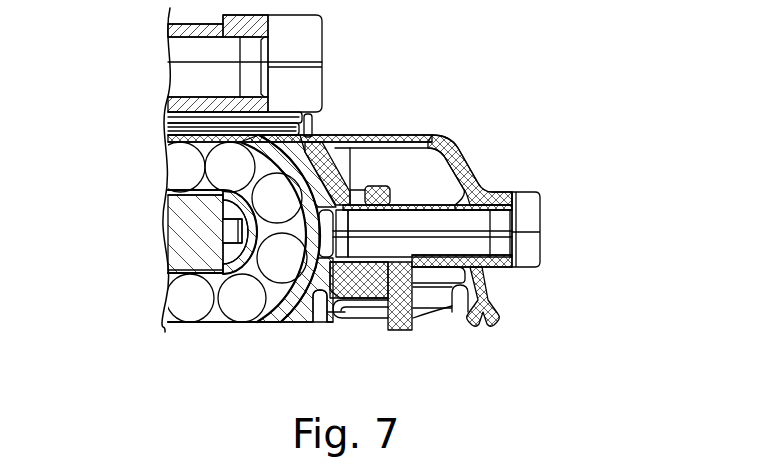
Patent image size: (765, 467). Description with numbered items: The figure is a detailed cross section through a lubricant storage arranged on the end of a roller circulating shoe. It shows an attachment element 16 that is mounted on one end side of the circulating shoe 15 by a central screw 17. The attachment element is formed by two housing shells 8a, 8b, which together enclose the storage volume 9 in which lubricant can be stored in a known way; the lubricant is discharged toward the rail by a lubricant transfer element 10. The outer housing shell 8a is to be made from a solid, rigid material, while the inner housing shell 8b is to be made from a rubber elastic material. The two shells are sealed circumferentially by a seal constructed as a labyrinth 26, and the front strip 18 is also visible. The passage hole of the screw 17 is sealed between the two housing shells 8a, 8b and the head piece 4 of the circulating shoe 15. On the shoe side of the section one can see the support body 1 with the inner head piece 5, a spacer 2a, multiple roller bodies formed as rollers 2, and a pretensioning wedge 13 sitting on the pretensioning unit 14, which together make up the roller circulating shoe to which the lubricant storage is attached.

The support body 1 is at (186, 213).
The rollers 2 is at (186, 298).
The spacer 2a is at (213, 324).
The head piece 4 is at (297, 323).
The inner head piece 5 is at (228, 246).
The outer housing shell 8a is at (412, 148).
The inner housing shell 8b is at (362, 170).
The storage volume 9 is at (472, 168).
The lubricant transfer element 10 is at (398, 331).
The pretensioning wedge 13 is at (181, 31).
The pretensioning unit 14 is at (187, 102).
The circulating shoe 15 is at (132, 159).
The attachment element 16 is at (586, 181).
The central screw 17 is at (531, 226).
The front strip 18 is at (500, 312).
The labyrinth 26 is at (332, 135).